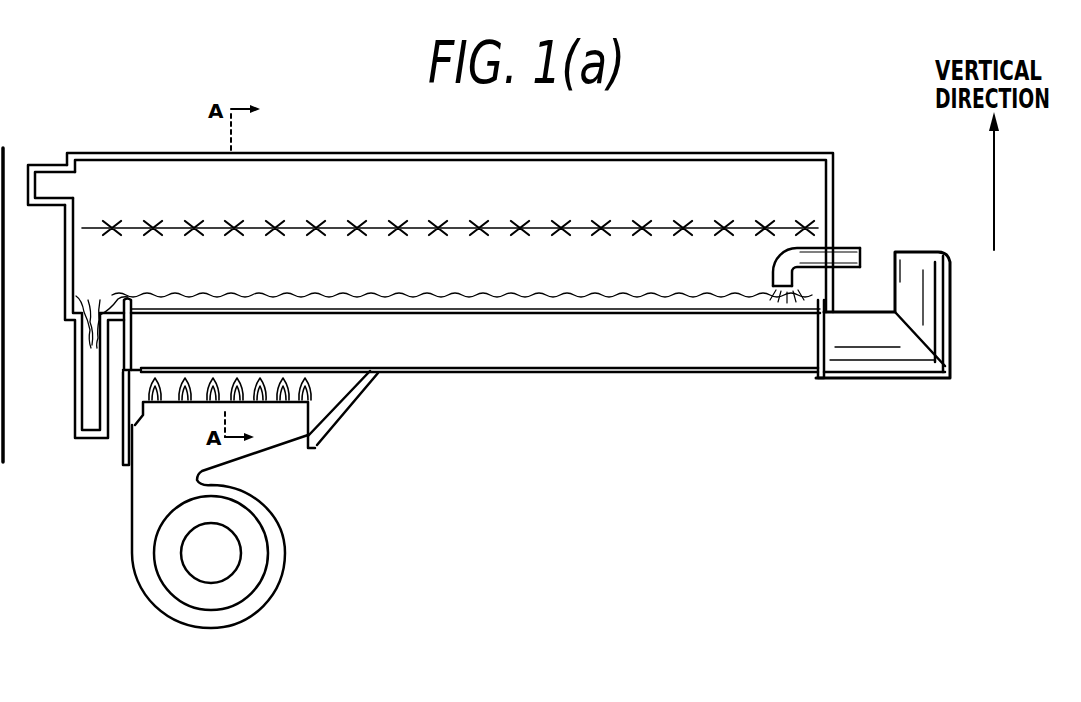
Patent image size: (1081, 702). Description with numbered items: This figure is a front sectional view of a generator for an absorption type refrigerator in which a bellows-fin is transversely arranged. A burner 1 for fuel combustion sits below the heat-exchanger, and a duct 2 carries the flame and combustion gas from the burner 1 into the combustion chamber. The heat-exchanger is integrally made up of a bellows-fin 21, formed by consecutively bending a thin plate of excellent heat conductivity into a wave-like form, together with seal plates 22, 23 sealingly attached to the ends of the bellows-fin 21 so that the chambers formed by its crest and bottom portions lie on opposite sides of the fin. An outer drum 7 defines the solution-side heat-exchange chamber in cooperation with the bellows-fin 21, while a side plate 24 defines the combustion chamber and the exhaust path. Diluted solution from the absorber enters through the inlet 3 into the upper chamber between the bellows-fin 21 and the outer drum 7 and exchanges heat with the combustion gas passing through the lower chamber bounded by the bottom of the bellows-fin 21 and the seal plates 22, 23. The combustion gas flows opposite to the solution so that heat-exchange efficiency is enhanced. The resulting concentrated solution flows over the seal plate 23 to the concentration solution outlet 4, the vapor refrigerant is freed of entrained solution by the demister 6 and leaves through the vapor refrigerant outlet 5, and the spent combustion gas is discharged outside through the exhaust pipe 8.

The burner 1 is at (130, 528).
The burner duct 2 is at (334, 356).
The diluted solution inlet 3 is at (847, 250).
The concentration solution outlet 4 is at (73, 370).
The vapor refrigerant outlet 5 is at (50, 165).
The demister 6 is at (503, 228).
The outer drum 7 is at (662, 153).
The exhaust pipe 8 is at (899, 380).
The bellows-fin 21 is at (444, 353).
The seal plate 22 is at (813, 335).
The seal plate 23 is at (119, 372).
The side plate 24 is at (612, 376).